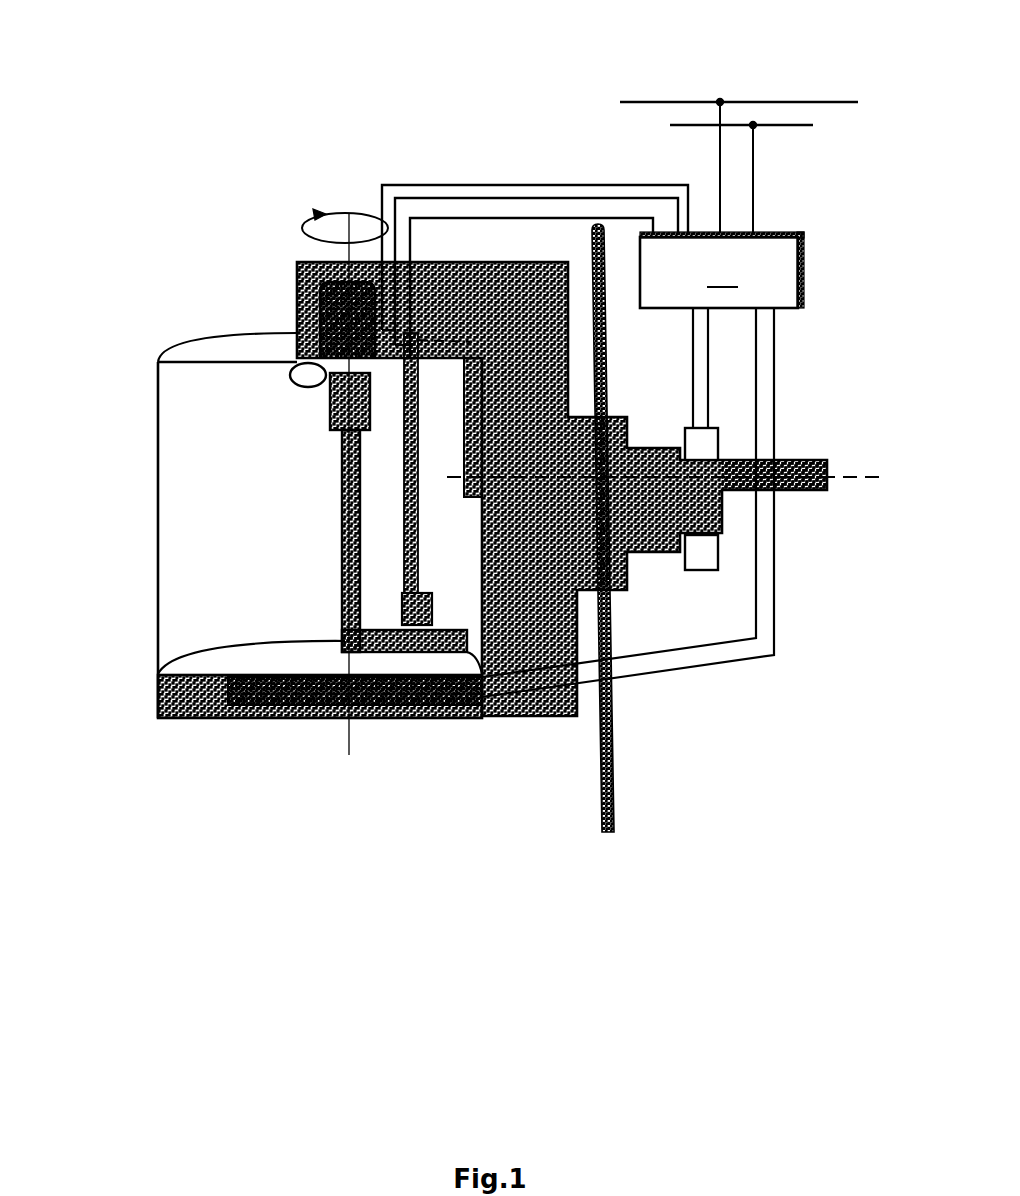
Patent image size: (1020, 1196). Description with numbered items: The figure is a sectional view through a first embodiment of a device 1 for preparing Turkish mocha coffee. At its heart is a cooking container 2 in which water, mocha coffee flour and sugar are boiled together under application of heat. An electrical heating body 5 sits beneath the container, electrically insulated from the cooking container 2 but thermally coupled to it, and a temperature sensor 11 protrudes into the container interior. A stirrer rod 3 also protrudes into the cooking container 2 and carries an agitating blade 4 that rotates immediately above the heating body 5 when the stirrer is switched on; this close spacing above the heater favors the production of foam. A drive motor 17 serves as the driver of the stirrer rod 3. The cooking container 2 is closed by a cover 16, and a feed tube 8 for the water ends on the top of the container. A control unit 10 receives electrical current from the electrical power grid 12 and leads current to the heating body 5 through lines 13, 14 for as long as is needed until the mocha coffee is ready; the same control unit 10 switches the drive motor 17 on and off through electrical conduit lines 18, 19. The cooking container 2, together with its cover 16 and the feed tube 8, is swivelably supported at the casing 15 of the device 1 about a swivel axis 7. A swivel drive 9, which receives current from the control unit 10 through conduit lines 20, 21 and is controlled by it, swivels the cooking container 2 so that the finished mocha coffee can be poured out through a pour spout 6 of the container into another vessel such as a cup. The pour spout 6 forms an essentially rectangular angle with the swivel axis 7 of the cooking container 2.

The device 1 is at (226, 162).
The cooking container 2 is at (177, 475).
The stirrer rod 3 is at (340, 473).
The agitating blade 4 is at (388, 647).
The electrical heating body 5 is at (277, 693).
The pour spout 6 is at (300, 382).
The swivel axis 7 is at (866, 470).
The feed tube 8 is at (466, 356).
The swivel drive 9 is at (700, 564).
The control unit 10 is at (722, 270).
The temperature sensor 11 is at (420, 554).
The electrical power grid 12 is at (785, 125).
The line 13 is at (683, 647).
The line 14 is at (670, 670).
The casing 15 is at (602, 760).
The cover 16 is at (300, 308).
The drive motor 17 is at (333, 290).
The electrical conduit line 18 is at (493, 182).
The electrical conduit line 19 is at (533, 193).
The conduit line 20 is at (690, 403).
The conduit line 21 is at (710, 403).